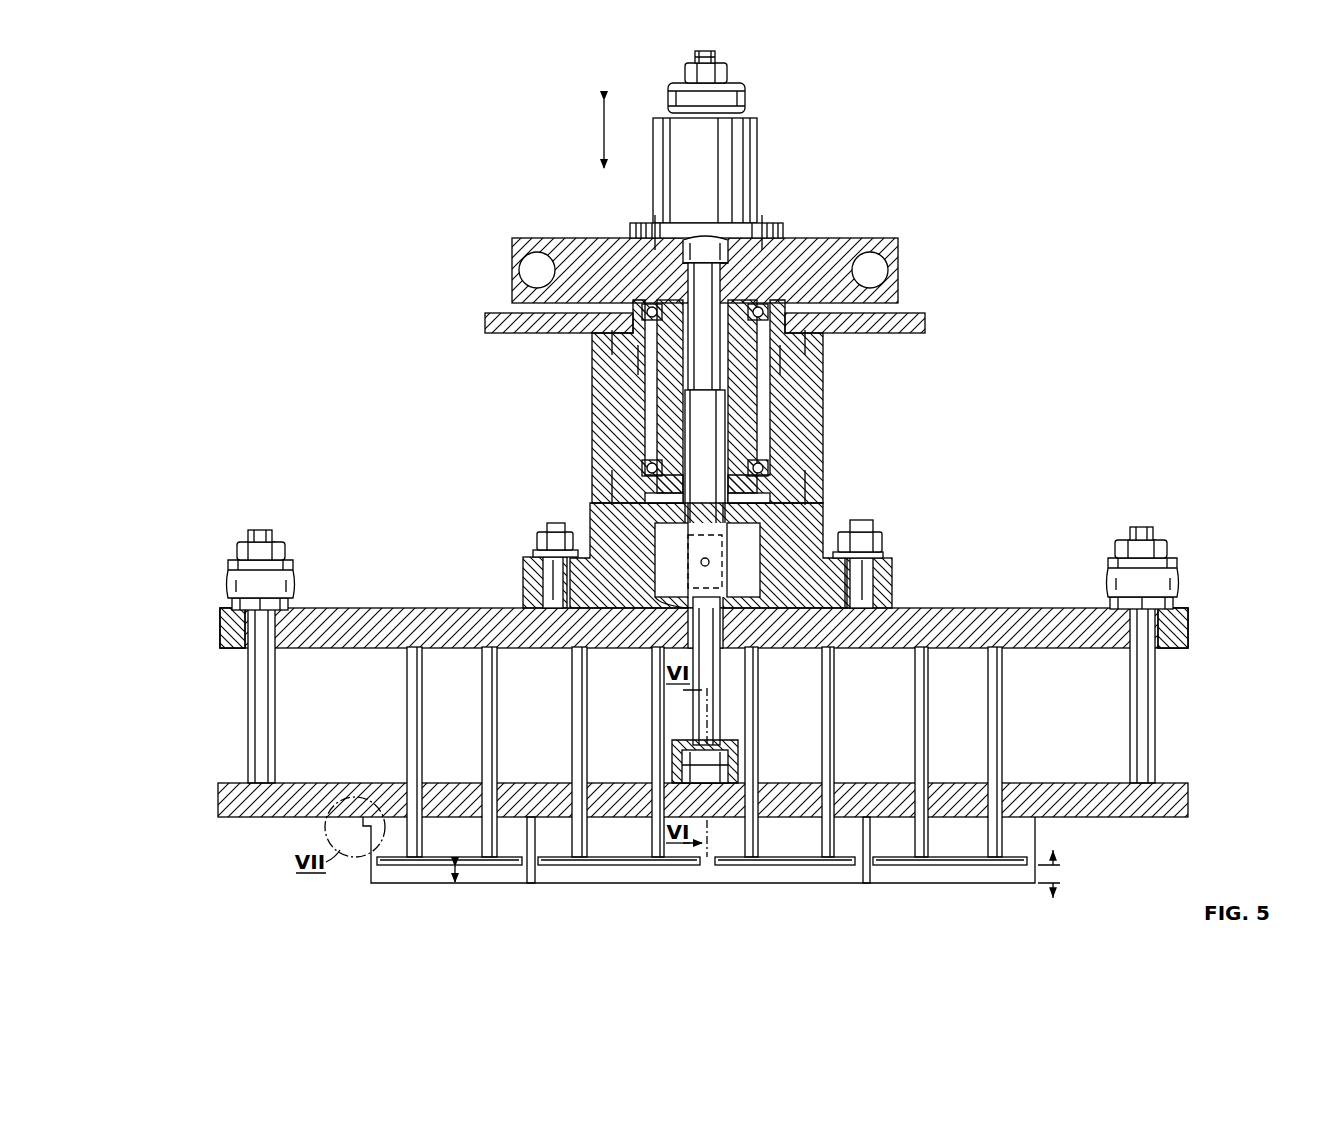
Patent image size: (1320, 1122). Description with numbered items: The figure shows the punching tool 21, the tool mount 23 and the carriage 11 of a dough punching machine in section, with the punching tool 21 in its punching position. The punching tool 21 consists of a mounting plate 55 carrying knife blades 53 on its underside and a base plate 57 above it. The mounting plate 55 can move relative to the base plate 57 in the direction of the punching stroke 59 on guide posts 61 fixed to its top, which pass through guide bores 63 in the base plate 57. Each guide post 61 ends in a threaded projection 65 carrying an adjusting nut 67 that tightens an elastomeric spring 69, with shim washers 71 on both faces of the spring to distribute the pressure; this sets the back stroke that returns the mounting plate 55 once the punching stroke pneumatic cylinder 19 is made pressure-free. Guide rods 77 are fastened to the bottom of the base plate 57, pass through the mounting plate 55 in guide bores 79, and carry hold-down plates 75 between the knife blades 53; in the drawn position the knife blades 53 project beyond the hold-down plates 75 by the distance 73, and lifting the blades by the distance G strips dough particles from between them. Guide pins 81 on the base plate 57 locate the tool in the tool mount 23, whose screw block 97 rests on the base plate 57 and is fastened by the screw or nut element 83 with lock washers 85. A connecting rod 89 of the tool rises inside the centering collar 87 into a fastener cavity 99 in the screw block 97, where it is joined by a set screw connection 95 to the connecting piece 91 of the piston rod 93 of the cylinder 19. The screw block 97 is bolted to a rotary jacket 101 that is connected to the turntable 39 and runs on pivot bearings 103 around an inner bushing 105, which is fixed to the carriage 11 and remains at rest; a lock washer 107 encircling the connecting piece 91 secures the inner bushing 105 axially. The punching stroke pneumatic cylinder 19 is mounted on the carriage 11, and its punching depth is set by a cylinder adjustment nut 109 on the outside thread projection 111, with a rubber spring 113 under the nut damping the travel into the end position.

The carriage 11 is at (565, 250).
The punching stroke pneumatic cylinder 19 is at (755, 160).
The punching tool 21 is at (218, 740).
The tool mount 23 is at (503, 398).
The turntable 39 is at (500, 318).
The knife blades 53 is at (728, 873).
The mounting plate 55 is at (1090, 817).
The base plate 57 is at (1005, 612).
The punching stroke 59 is at (600, 131).
The guide posts 61 is at (262, 712).
The guide bores 63 is at (235, 637).
The projections 65 is at (263, 530).
The adjusting nut 67 is at (283, 547).
The elastomeric spring 69 is at (232, 587).
The shim washers 71 is at (290, 603).
The distance 73 is at (456, 883).
The hold-down plates 75 is at (887, 866).
The guide rods 77 is at (990, 723).
The guide bores 79 is at (1005, 783).
The guide pins 81 is at (548, 588).
The screw or nut element 83 is at (540, 535).
The lock washers 85 is at (533, 553).
The centering collar 87 is at (670, 604).
The connecting rod 89 is at (720, 660).
The connecting piece 91 is at (723, 416).
The piston rod 93 is at (713, 355).
The set screw connection 95 is at (712, 562).
The screw block 97 is at (597, 513).
The fastener cavity 99 is at (682, 556).
The rotary jacket 101 is at (635, 430).
The pivot bearings 103 is at (768, 296).
The inner bushing 105 is at (668, 400).
The lock washer 107 is at (767, 483).
The cylinder adjustment nut 109 is at (685, 75).
The outside thread projection 111 is at (715, 58).
The rubber spring 113 is at (745, 100).
The distance G is at (1059, 874).